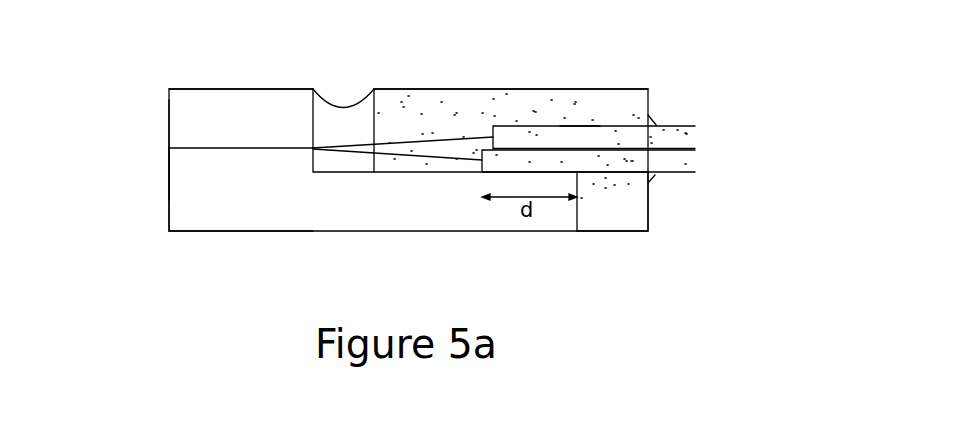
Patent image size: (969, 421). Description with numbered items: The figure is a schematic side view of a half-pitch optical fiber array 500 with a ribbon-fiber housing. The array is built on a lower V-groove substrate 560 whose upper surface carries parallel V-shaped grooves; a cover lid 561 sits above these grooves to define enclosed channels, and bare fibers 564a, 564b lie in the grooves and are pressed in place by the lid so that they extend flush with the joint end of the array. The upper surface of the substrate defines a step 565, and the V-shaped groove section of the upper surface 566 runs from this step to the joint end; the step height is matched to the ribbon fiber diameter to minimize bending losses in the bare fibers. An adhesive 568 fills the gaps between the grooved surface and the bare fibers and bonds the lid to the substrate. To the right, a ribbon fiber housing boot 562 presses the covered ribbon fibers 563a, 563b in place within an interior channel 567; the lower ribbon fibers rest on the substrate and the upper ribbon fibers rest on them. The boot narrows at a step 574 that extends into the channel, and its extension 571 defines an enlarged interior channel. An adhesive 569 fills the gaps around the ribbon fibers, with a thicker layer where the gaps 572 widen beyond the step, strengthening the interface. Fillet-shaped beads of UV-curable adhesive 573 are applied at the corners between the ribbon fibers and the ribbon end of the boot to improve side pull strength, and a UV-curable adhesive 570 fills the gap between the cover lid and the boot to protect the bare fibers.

The optical fiber array 500 is at (132, 207).
The lower V-groove substrate 560 is at (218, 208).
The cover lid 561 is at (206, 113).
The ribbon fiber housing boot 562 is at (482, 102).
The ribbon fibers 563a is at (695, 138).
The ribbon fibers 563b is at (697, 162).
The bare fibers 564a is at (410, 138).
The bare fibers 564b is at (422, 160).
The step 565 is at (313, 170).
The V-shaped groove section of the upper surface 566 is at (267, 148).
The interior channel 567 is at (575, 125).
The adhesive 568 is at (157, 148).
The adhesive 569 is at (457, 148).
The UV-curable adhesive 570 is at (338, 122).
The extension 571 is at (623, 232).
The gaps 572 is at (612, 185).
The fillet-shaped bead of UV-curable adhesive 573 is at (651, 185).
The step 574 is at (576, 245).